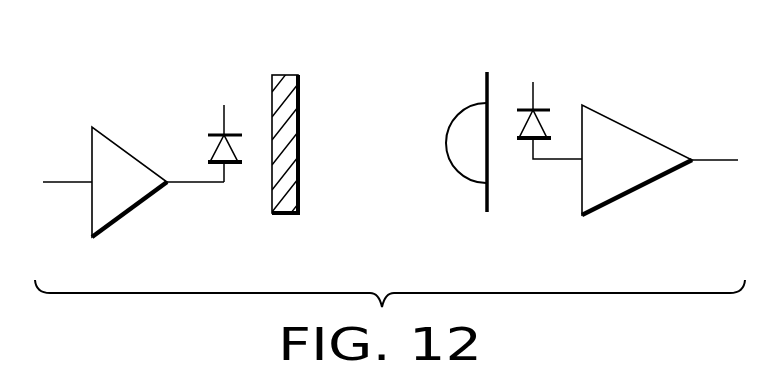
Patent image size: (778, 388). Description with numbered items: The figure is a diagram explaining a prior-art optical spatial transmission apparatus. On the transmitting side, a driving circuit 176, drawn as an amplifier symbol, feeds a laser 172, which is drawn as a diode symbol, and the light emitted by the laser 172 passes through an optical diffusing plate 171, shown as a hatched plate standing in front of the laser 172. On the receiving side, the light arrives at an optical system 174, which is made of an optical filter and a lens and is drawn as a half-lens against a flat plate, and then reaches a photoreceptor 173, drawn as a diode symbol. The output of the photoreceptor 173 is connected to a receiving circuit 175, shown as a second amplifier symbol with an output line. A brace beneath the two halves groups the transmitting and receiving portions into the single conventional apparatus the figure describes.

The optical diffusing plate 171 is at (285, 73).
The laser 172 is at (235, 165).
The photoreceptor 173 is at (546, 100).
The optical system 174 is at (452, 168).
The receiving circuit 175 is at (641, 131).
The driving circuit 176 is at (118, 142).